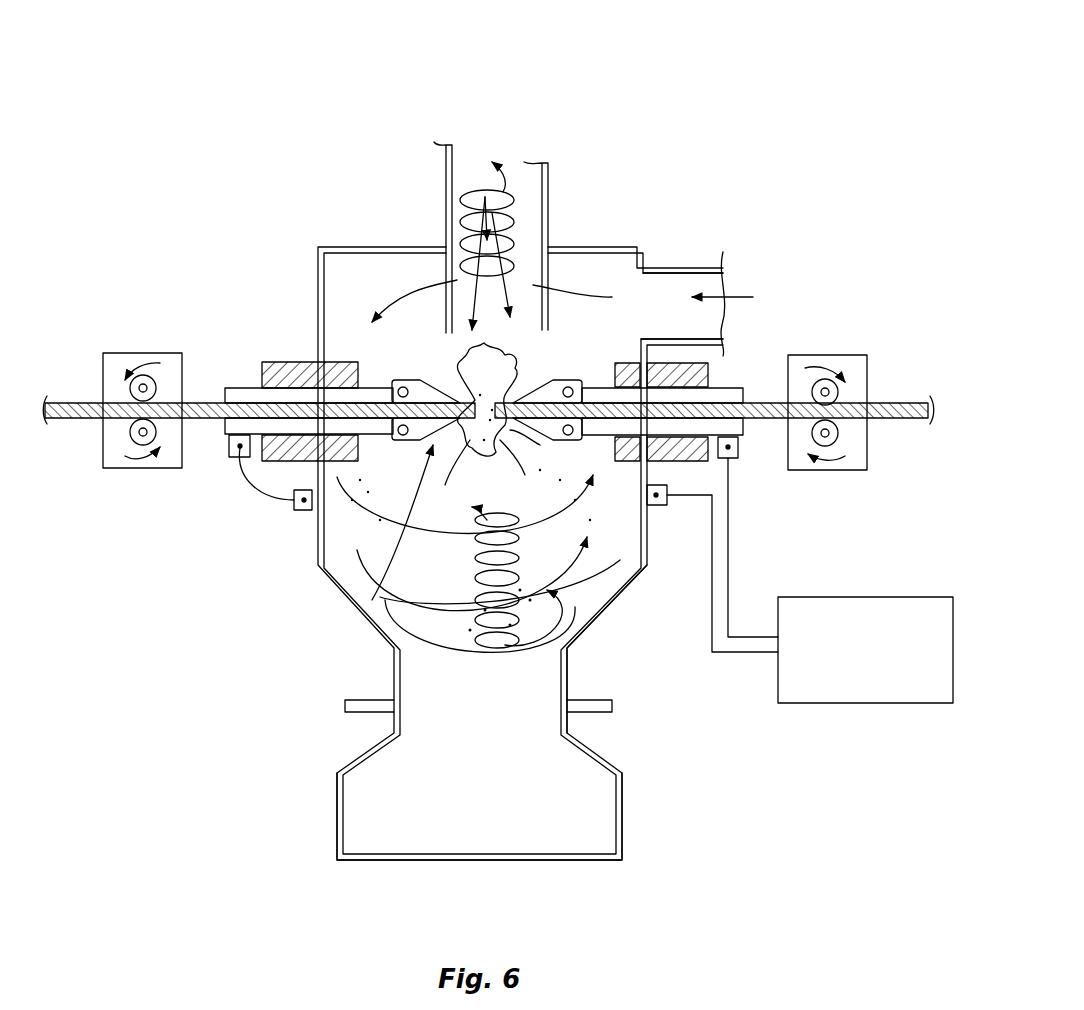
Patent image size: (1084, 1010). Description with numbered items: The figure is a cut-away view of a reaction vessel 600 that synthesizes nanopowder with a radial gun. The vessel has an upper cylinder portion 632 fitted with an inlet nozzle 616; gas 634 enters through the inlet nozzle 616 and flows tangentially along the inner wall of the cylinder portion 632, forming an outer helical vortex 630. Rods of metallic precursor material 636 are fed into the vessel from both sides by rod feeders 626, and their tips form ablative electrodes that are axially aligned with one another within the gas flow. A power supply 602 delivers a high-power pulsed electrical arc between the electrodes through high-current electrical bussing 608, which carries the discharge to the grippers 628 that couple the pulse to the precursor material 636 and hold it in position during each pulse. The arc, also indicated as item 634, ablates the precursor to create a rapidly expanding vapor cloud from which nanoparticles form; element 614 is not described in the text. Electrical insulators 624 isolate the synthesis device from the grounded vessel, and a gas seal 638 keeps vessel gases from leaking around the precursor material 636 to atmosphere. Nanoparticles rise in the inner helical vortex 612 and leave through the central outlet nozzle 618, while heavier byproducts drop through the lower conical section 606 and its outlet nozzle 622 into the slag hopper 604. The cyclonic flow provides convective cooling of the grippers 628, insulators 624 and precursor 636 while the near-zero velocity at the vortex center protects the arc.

The reaction vessel 600 is at (488, 76).
The power supply 602 is at (818, 705).
The slag hopper 604 is at (535, 861).
The conical section 606 is at (598, 608).
The high-current electrical bussing 608 is at (712, 535).
The inner helical vortex 612 is at (520, 227).
The arc 614 is at (535, 358).
The inlet nozzle 616 is at (717, 263).
The outlet nozzle 618 is at (445, 173).
The outlet nozzle 622 is at (393, 690).
The electrical insulators 624 is at (300, 360).
The rod feeders 626 is at (145, 353).
The gripper 628 is at (372, 560).
The helical vortex 630 is at (320, 518).
The cylinder portion 632 is at (318, 280).
The gas / high-power pulsed electrical arc 634 is at (757, 282).
The metallic precursor material 636 is at (78, 400).
The gas seal 638 is at (745, 428).